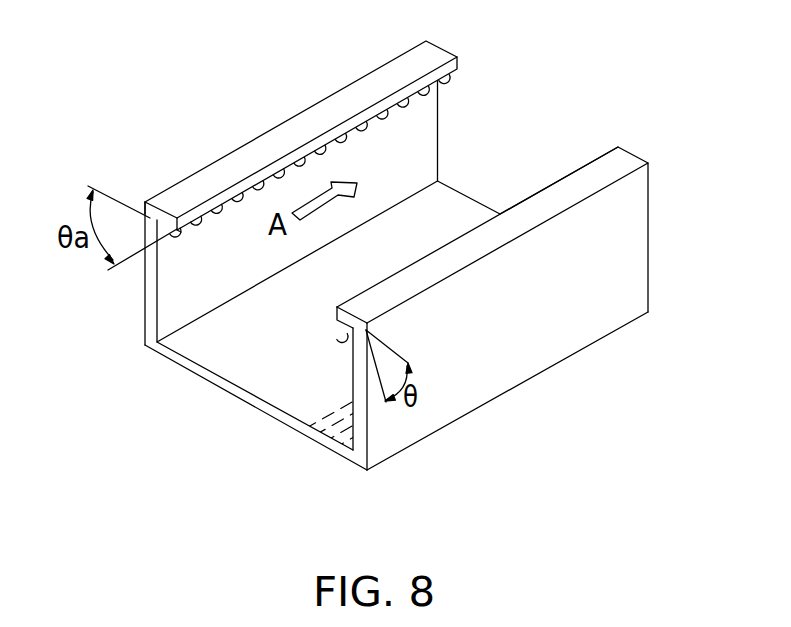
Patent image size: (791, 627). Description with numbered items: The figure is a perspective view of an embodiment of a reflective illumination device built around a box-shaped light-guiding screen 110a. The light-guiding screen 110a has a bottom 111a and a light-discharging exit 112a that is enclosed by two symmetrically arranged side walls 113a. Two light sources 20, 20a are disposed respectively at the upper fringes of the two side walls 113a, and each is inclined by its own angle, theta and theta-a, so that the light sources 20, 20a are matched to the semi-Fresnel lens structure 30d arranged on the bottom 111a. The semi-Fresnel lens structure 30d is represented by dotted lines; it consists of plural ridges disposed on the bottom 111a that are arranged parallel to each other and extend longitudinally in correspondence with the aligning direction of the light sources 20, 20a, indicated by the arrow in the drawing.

The light source 20 is at (342, 338).
The light source 20a is at (177, 238).
The semi-Fresnel lens structure 30d is at (230, 370).
The light-guiding screen 110a is at (512, 405).
The bottom 111a is at (257, 417).
The light-discharging exit 112a is at (532, 92).
The side wall 113a is at (432, 135).